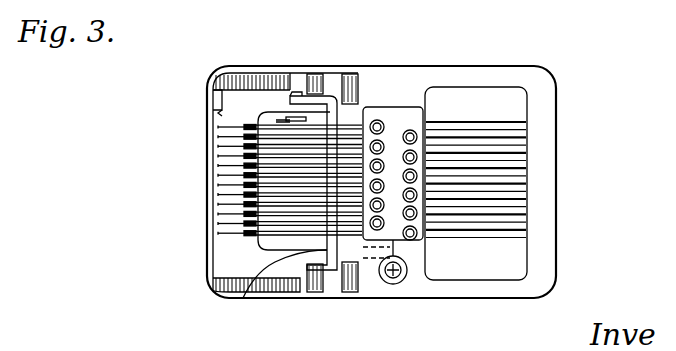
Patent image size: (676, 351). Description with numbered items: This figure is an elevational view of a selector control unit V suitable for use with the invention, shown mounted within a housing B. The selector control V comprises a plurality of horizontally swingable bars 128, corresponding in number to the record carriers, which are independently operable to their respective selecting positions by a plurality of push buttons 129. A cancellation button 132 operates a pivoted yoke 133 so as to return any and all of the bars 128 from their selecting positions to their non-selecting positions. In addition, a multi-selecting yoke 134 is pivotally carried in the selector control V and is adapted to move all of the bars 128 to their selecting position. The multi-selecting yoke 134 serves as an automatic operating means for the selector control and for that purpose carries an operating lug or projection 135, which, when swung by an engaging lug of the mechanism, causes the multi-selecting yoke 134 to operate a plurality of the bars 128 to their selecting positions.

The housing / base B is at (460, 67).
The selector control V is at (504, 120).
The horizontally swingable bars 128 is at (523, 157).
The push buttons 129 is at (408, 130).
The cancellation button 132 is at (391, 284).
The pivoted yoke 133 is at (250, 290).
The multi-selecting yoke 134 is at (308, 266).
The operating lug or projection 135 is at (286, 118).